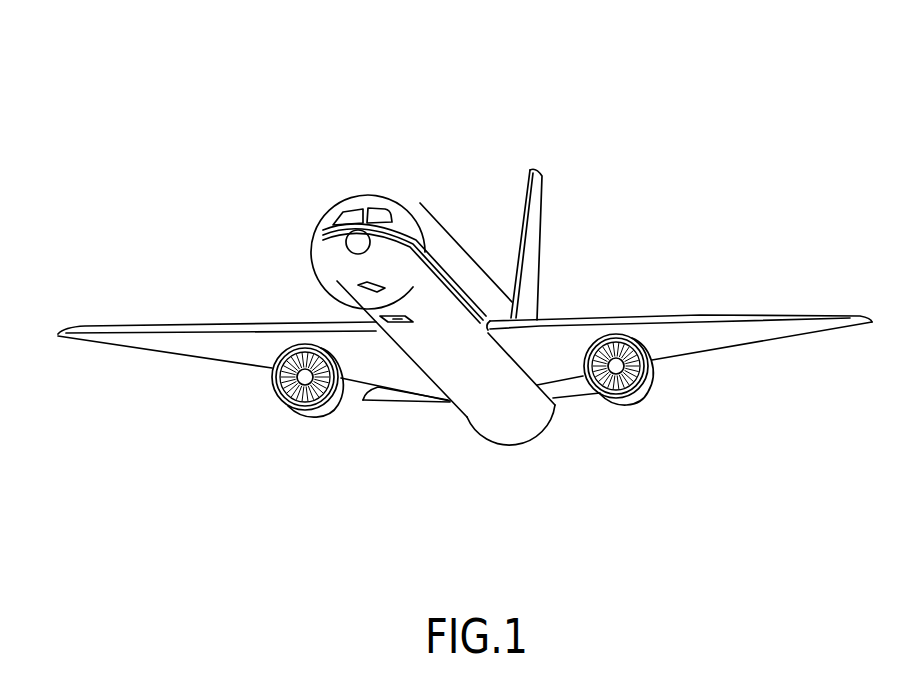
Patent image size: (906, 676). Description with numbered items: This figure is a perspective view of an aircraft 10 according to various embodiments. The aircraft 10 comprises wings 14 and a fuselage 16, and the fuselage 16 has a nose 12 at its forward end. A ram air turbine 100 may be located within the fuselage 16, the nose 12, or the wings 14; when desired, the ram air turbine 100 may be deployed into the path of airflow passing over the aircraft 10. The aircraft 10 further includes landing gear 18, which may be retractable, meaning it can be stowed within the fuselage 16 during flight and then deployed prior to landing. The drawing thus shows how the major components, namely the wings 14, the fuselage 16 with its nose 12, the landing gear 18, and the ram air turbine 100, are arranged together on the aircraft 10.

The aircraft 10 is at (299, 112).
The nose 12 is at (340, 270).
The wings 14 is at (570, 325).
The fuselage 16 is at (461, 403).
The landing gear 18 is at (403, 323).
The ram air turbine 100 is at (374, 284).